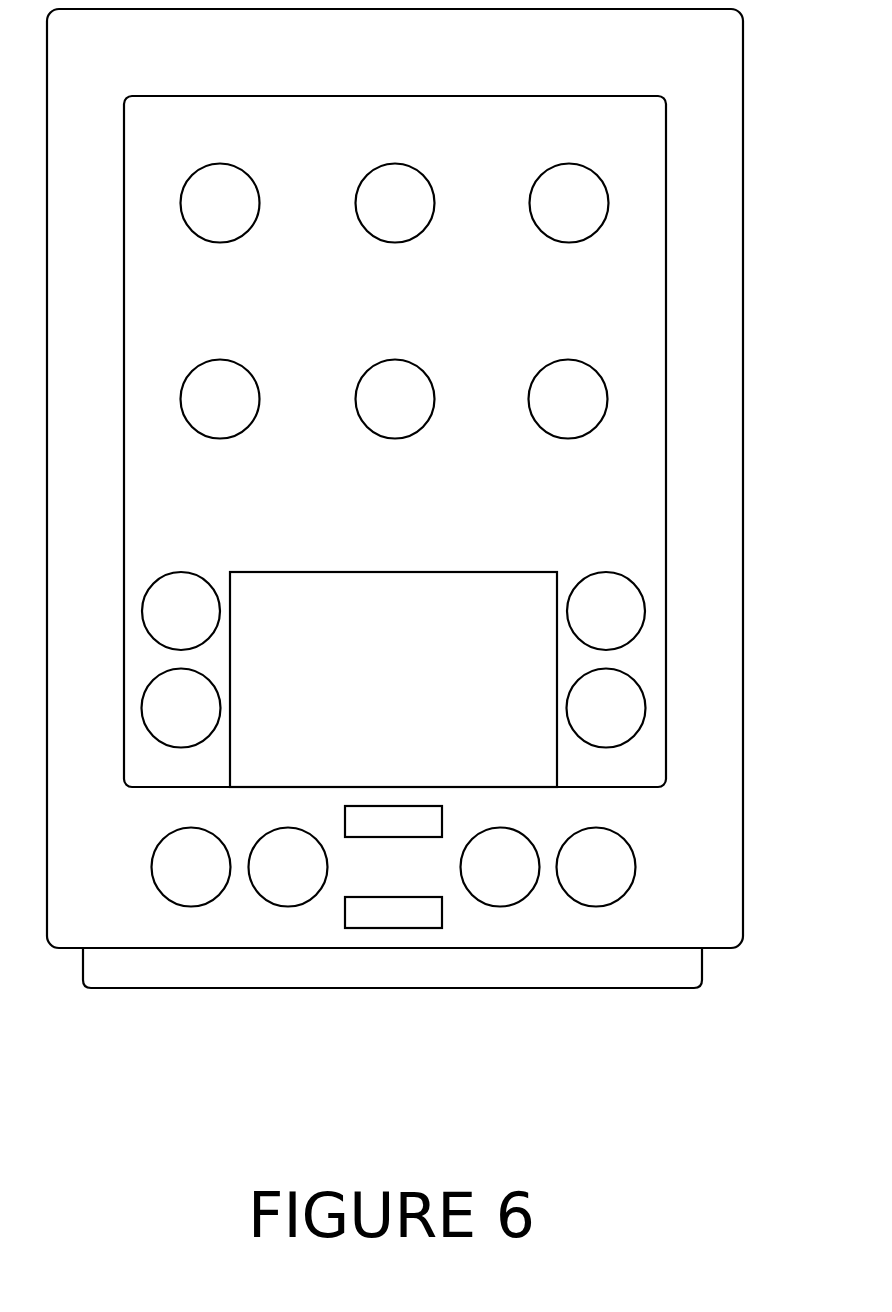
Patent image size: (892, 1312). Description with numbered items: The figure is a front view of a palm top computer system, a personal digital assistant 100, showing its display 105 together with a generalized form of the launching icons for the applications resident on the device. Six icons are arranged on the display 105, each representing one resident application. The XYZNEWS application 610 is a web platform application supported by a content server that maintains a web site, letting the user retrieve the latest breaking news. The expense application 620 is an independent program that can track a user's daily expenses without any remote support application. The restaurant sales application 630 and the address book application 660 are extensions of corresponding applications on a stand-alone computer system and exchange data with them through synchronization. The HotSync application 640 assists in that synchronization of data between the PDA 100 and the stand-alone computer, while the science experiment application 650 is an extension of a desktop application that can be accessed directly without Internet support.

The personal digital assistant 100 is at (395, 498).
The display 105 is at (606, 93).
The XYZNEWS application 610 is at (222, 192).
The expense application 620 is at (397, 180).
The restaurant sales application 630 is at (568, 180).
The HotSync application 640 is at (219, 389).
The science experiment application 650 is at (397, 378).
The address book application 660 is at (567, 378).